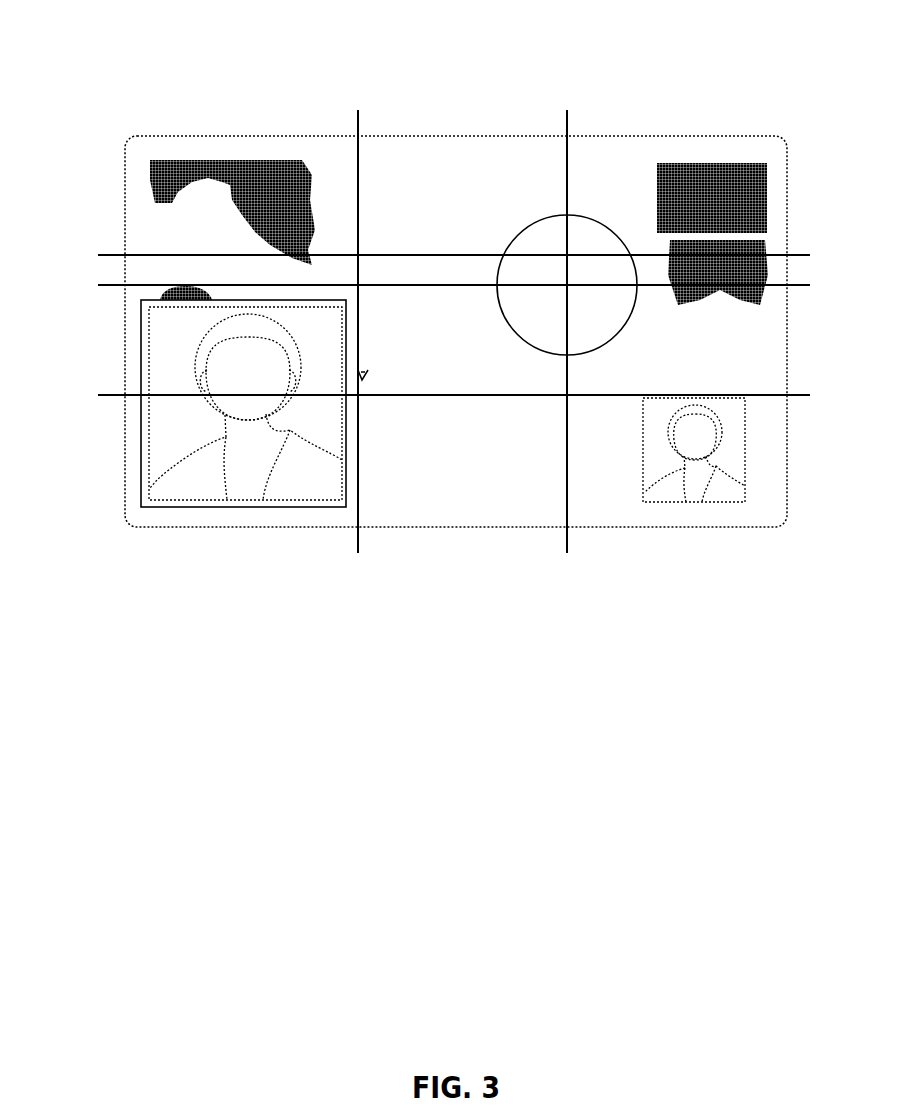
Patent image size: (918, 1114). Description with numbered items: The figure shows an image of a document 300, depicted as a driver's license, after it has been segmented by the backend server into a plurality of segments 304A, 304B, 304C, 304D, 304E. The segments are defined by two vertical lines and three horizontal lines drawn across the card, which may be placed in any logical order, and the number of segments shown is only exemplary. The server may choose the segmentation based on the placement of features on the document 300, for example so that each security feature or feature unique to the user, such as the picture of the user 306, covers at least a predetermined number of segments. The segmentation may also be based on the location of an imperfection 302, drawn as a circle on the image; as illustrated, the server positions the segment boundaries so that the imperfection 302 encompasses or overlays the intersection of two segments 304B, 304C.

The document 300 is at (99, 66).
The imperfection 302 is at (607, 225).
The segment 304A is at (358, 130).
The segment 304B is at (567, 122).
The segment 304C is at (98, 255).
The segment 304D is at (99, 286).
The segment 304E is at (99, 396).
The photograph region 306 is at (270, 508).